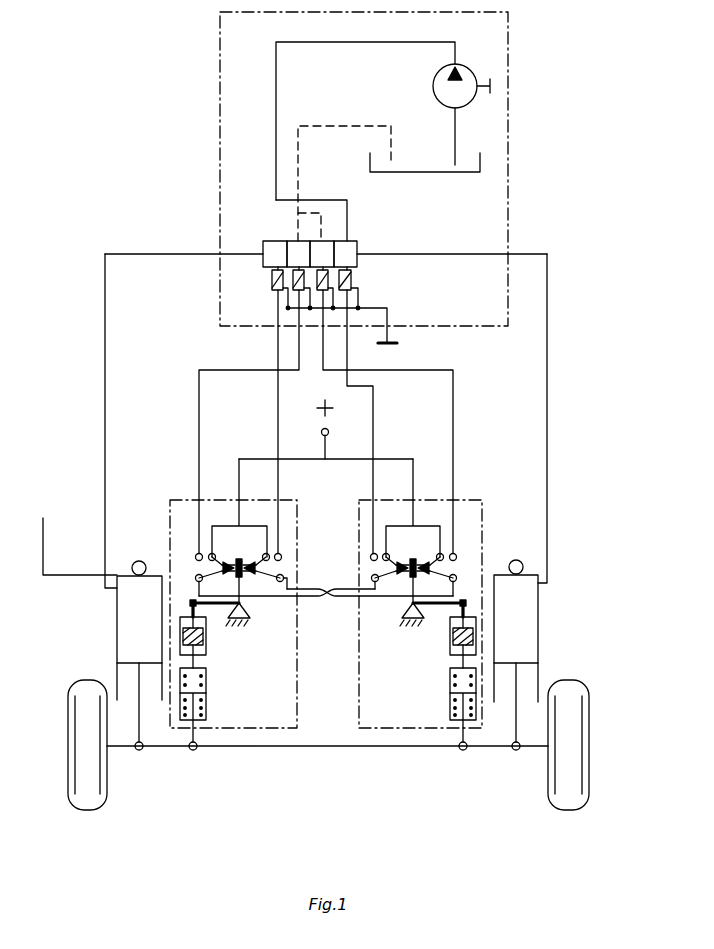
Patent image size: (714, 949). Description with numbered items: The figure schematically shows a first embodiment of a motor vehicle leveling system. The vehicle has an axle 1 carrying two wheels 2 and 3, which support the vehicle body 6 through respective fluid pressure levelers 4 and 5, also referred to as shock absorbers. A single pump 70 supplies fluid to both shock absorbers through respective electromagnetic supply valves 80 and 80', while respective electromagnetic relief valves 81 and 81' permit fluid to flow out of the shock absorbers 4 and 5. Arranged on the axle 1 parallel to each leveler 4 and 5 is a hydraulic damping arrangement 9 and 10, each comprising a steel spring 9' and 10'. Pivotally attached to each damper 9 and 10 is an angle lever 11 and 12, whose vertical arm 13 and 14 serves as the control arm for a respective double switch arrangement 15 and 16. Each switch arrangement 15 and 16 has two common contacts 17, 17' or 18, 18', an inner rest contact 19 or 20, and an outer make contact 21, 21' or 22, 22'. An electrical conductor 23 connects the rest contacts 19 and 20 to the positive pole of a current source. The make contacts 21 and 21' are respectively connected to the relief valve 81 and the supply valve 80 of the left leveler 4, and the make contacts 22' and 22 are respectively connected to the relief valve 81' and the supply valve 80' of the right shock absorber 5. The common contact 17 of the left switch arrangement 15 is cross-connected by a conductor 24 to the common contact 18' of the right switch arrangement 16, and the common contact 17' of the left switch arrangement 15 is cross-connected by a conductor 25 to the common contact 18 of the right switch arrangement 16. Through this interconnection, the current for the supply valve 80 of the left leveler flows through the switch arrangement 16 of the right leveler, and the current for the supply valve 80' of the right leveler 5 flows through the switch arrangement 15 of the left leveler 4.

The axle 1 is at (297, 748).
The wheel 2 is at (87, 811).
The wheel 3 is at (575, 809).
The fluid pressure leveler 4 is at (118, 613).
The fluid pressure leveler 5 is at (532, 626).
The vehicle body 6 is at (40, 560).
The hydraulic damping arrangement 9 is at (209, 729).
The steel spring 9' is at (199, 735).
The hydraulic damping arrangement 10 is at (422, 728).
The steel spring 10' is at (442, 734).
The angle lever 11 is at (213, 612).
The angle lever 12 is at (447, 610).
The vertical arm 13 is at (243, 590).
The vertical arm 14 is at (410, 590).
The double switch arrangement 15 is at (225, 515).
The double switch arrangement 16 is at (428, 514).
The common contact 17 is at (189, 590).
The common contact 17' is at (299, 577).
The common contact 18 is at (467, 582).
The common contact 18' is at (356, 576).
The rest contact 19 is at (267, 548).
The rest contact 20 is at (433, 548).
The make contact 21 is at (189, 554).
The make contact 21' is at (299, 544).
The make contact 22 is at (356, 544).
The make contact 22' is at (478, 544).
The electrical conductor 23 is at (301, 457).
The conductor 24 is at (310, 598).
The conductor 25 is at (348, 598).
The pump 70 is at (468, 85).
The electromagnetic valve 80 is at (213, 361).
The electromagnetic valve 80' is at (387, 373).
The electromagnetic relief valve 81 is at (225, 328).
The electromagnetic relief valve 81' is at (381, 365).